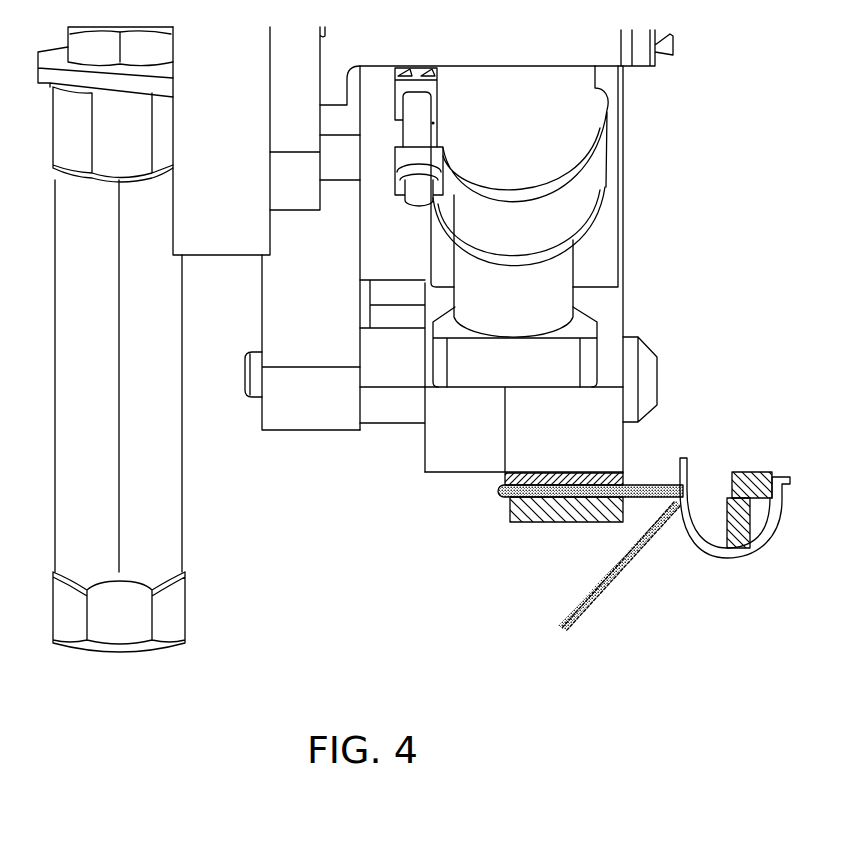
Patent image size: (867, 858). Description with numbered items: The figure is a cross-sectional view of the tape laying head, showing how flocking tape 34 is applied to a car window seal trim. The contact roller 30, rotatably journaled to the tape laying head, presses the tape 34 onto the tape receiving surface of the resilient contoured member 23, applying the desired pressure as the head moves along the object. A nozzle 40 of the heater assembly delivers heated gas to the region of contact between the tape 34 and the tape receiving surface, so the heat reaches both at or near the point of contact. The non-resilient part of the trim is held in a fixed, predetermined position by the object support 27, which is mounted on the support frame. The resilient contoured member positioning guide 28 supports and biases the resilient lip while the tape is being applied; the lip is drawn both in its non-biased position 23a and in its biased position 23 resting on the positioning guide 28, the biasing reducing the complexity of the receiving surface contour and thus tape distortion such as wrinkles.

The nozzle 40 is at (520, 300).
The contact roller 30 is at (578, 420).
The tape 34 is at (598, 472).
The resilient contoured member 23 is at (498, 491).
The resilient contoured member positioning guide 28 is at (545, 512).
The object support 27 is at (750, 473).
The resilient contoured member in non-biased position 23a is at (613, 577).